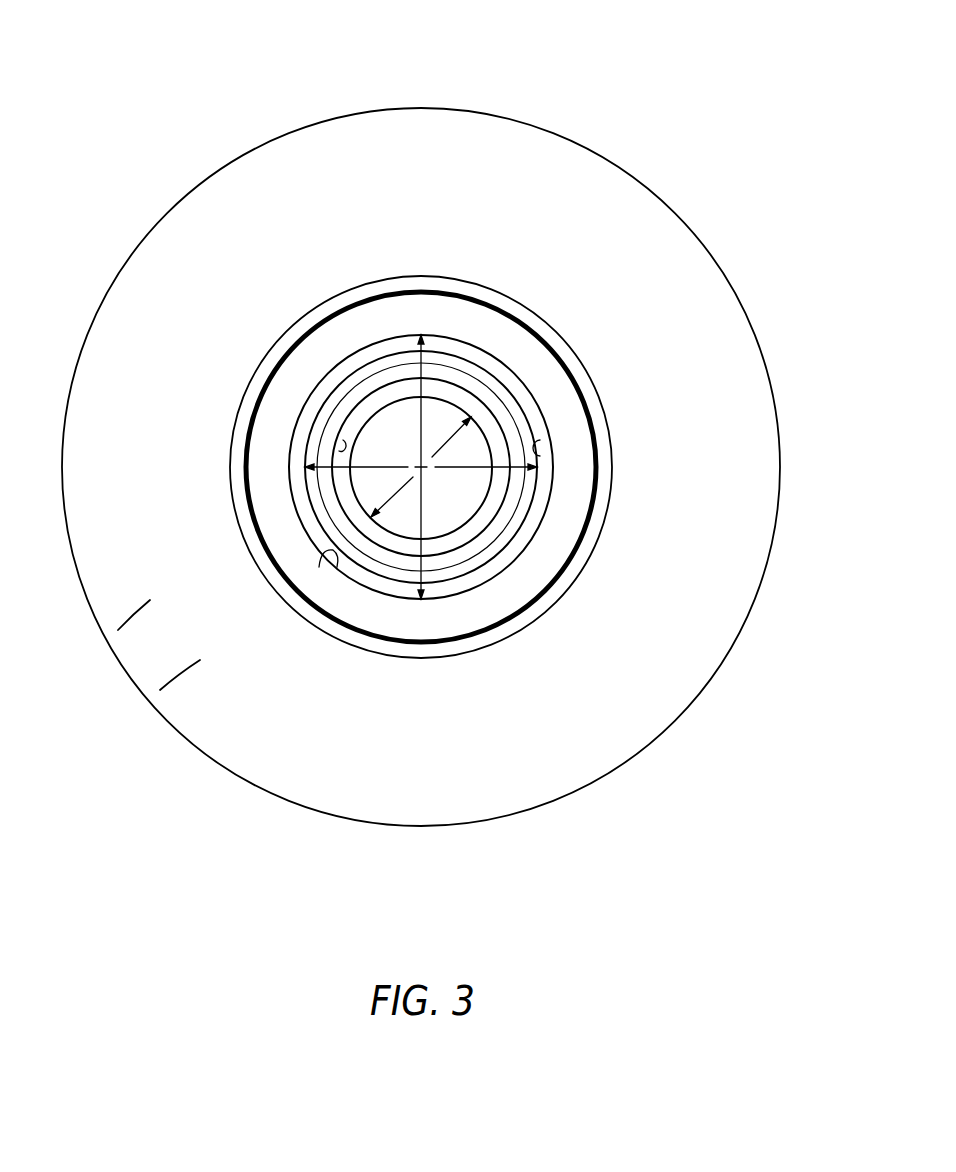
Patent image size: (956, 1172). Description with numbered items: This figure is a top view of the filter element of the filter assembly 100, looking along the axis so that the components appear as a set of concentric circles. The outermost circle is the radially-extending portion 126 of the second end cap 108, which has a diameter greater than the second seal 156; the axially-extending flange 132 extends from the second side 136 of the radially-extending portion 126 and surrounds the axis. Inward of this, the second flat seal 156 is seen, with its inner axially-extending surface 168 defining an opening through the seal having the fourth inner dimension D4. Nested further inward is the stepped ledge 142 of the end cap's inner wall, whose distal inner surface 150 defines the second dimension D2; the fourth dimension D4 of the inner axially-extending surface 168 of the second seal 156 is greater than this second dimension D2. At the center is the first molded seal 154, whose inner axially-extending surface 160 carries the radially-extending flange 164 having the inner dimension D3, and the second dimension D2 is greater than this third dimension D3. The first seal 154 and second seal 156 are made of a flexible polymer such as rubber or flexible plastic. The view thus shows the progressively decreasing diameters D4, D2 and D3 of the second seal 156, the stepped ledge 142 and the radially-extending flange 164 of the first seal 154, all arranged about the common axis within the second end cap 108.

The filter assembly 100 is at (143, 81).
The second end cap 108 is at (610, 723).
The radially-extending portion 126 is at (138, 618).
The second side 136 is at (177, 682).
The axially-extending flange 132 is at (478, 642).
The second flat seal 156 is at (558, 405).
The stepped ledge 142 is at (500, 368).
The first molded seal 154 is at (370, 398).
The radially-extending flange 164 is at (397, 543).
The inner axially-extending surface 160 is at (342, 443).
The distal inner surface 150 is at (533, 450).
The inner axially-extending surface 168 is at (335, 568).
The second radially-extending dimension D2 is at (462, 470).
The inner dimension of the radially-extending flange D3 is at (390, 493).
The fourth inner dimension D4 is at (423, 422).